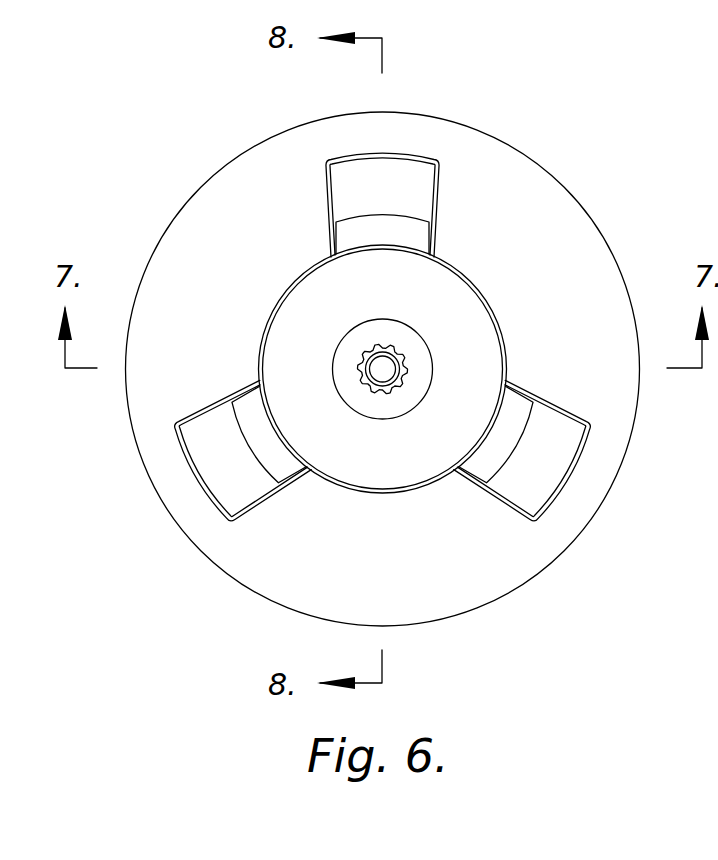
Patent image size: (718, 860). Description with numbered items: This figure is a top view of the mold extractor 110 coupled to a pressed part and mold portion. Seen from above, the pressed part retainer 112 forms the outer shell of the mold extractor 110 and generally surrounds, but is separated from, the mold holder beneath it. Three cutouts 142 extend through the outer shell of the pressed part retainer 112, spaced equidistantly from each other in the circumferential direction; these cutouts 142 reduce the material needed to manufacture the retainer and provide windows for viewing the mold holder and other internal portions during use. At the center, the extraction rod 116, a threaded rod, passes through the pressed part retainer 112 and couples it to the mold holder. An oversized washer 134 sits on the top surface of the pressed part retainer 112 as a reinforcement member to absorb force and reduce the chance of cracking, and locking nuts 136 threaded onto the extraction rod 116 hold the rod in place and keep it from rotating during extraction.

The mold extractor 110 is at (247, 172).
The pressed part retainer 112 is at (533, 175).
The cutouts 142 is at (413, 183).
The oversized washer 134 is at (357, 345).
The extraction rod 116 is at (388, 365).
The locking nuts 136 is at (384, 392).